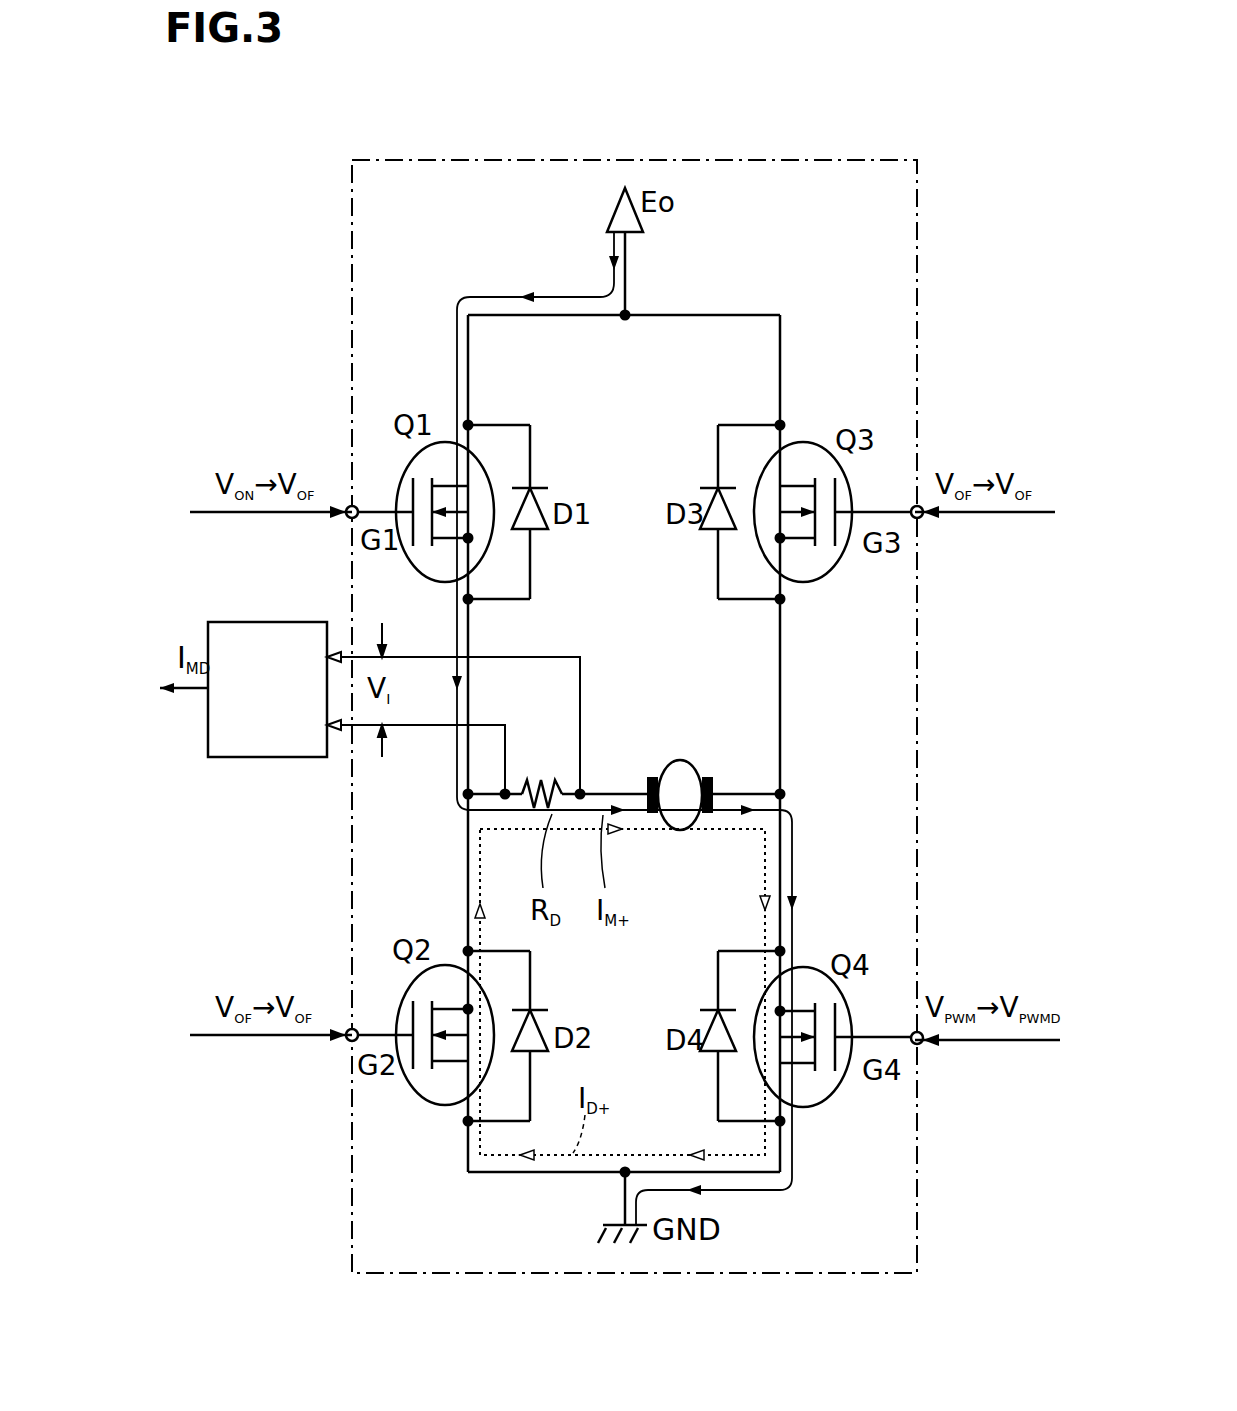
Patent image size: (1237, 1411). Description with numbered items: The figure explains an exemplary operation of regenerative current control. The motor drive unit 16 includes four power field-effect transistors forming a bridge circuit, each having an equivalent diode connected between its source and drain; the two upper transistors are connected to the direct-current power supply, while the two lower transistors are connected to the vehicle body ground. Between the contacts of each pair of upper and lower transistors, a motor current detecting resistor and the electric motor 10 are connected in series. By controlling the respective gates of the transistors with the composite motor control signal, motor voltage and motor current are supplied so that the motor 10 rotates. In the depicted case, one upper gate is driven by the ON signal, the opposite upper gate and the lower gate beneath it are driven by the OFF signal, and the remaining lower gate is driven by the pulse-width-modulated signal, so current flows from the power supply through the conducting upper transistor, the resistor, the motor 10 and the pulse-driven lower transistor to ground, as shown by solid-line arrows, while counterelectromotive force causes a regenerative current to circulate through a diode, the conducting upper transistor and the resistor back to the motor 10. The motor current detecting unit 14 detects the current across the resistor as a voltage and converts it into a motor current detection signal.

The electric motor 10 is at (680, 832).
The motor current detecting unit 14 is at (270, 622).
The motor drive unit 16 is at (731, 160).